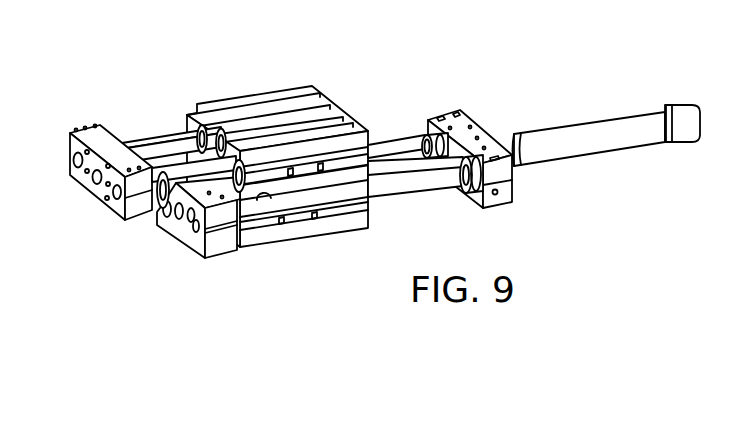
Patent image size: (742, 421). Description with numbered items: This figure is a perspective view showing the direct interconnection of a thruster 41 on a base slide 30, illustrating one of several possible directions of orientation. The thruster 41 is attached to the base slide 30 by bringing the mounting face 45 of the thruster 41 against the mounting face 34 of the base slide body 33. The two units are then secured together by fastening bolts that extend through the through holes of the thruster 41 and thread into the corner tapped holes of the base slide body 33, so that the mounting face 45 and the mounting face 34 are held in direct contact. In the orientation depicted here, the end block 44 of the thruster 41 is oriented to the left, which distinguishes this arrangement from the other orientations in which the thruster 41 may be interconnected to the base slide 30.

The base slide 30 is at (385, 164).
The thruster 41 is at (278, 65).
The end block 44 is at (110, 143).
The mounting face 45 is at (335, 185).
The base slide body 33 is at (342, 224).
The mounting face 34 is at (256, 196).